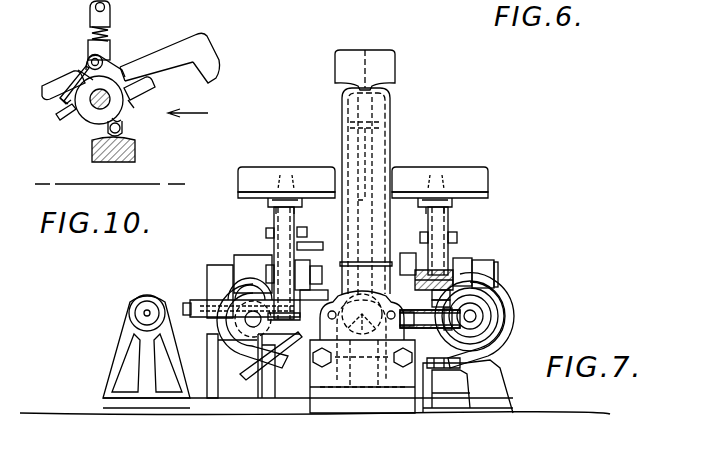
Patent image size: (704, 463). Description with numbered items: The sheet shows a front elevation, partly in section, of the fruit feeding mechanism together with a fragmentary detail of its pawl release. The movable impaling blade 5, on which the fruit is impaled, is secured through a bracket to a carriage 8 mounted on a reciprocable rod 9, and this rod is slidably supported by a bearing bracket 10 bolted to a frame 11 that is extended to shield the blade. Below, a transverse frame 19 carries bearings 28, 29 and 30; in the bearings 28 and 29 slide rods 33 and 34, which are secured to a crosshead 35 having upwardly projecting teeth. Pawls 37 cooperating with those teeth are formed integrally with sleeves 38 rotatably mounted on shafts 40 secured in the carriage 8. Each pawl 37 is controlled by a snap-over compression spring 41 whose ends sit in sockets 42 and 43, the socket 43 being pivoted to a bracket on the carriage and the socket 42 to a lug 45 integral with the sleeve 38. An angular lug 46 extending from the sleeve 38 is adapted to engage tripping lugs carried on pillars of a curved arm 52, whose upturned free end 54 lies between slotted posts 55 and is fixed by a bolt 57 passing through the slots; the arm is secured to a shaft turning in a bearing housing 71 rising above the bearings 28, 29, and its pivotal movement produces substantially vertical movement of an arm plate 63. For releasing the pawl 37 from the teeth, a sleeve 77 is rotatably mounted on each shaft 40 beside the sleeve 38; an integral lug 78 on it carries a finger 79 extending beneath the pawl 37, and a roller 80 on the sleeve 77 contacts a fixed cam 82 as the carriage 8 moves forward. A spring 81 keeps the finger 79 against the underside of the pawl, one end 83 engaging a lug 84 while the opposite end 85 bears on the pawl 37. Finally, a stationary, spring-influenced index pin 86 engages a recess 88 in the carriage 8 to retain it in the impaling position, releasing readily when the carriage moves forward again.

In FIG. 7, the movable impaling blade 5 is at (390, 160).
In FIG. 7, the carriage 8 is at (336, 290).
In FIG. 7, the reciprocable rod 9 is at (376, 388).
In FIG. 7, the bearing bracket 10 is at (352, 388).
In FIG. 7, the frame 11 is at (342, 108).
In FIG. 7, the transverse frame 19 is at (238, 414).
In FIG. 7, the bearing 28 is at (498, 363).
In FIG. 7, the bearing 29 is at (318, 337).
In FIG. 7, the bearing 30 is at (122, 357).
In FIG. 7, the rod 33 is at (483, 310).
In FIG. 7, the rod 34 is at (264, 322).
In FIG. 7, the crosshead 35 is at (272, 400).
In FIG. 10, the pawl 37 is at (201, 33).
In FIG. 10, the sleeve 38 is at (80, 72).
In FIG. 7, the sleeve 38 is at (436, 276).
In FIG. 10, the shaft 40 is at (98, 104).
In FIG. 7, the shaft 40 is at (470, 262).
In FIG. 10, the compression spring 41 is at (108, 33).
In FIG. 10, the socket 42 is at (88, 48).
In FIG. 10, the socket 43 is at (90, 16).
In FIG. 10, the lug 45 is at (104, 60).
In FIG. 10, the angular lug 46 is at (55, 82).
In FIG. 7, the arm 52 is at (296, 340).
In FIG. 7, the free end 54 is at (285, 246).
In FIG. 7, the slotted post 55 is at (274, 224).
In FIG. 7, the bolt 57 is at (303, 240).
In FIG. 7, the arm plate 63 is at (276, 172).
In FIG. 7, the bearing housing 71 is at (246, 255).
In FIG. 10, the sleeve 77 is at (90, 116).
In FIG. 7, the sleeve 77 is at (496, 278).
In FIG. 10, the lug 78 is at (133, 107).
In FIG. 10, the finger 79 is at (154, 93).
In FIG. 10, the roller 80 is at (122, 126).
In FIG. 10, the spring 81 is at (62, 78).
In FIG. 10, the fixed cam 82 is at (136, 147).
In FIG. 10, the spring end 83 is at (60, 98).
In FIG. 10, the lug 84 is at (56, 116).
In FIG. 10, the spring end 85 is at (134, 60).
In FIG. 7, the index pin 86 is at (410, 330).
In FIG. 7, the recess 88 is at (386, 325).